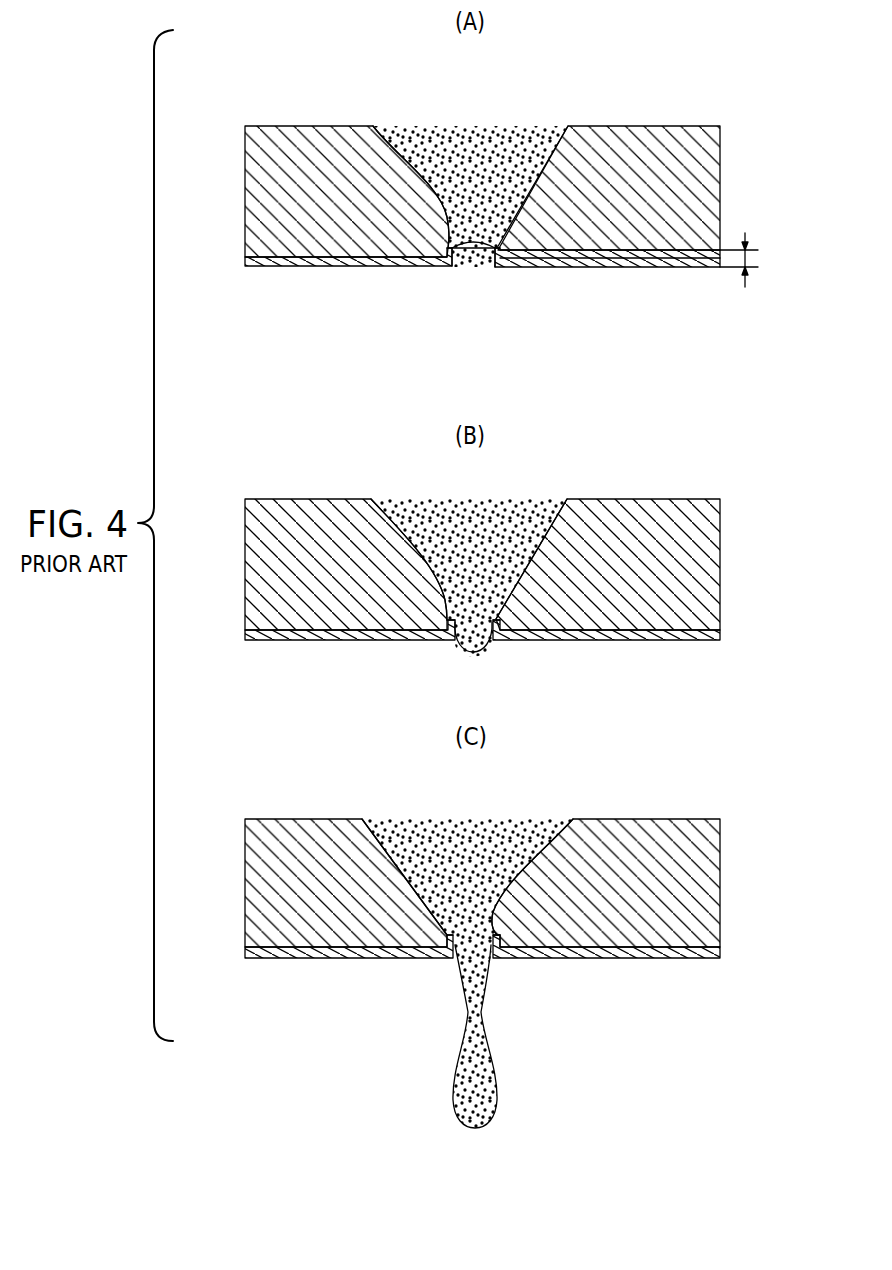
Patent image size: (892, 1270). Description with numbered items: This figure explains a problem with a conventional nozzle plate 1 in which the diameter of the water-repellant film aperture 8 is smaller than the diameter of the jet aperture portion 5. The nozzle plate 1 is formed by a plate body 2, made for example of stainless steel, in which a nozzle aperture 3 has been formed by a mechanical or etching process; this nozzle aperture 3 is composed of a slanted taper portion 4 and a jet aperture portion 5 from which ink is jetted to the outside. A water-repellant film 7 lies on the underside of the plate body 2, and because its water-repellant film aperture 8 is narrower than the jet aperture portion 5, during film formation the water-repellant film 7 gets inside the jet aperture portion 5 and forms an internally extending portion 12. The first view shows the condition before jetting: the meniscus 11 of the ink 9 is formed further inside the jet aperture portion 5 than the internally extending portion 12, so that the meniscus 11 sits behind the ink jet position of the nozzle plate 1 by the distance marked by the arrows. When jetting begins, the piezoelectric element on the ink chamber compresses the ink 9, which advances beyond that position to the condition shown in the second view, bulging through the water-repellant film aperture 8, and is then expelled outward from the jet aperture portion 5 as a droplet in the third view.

The nozzle plate 1 is at (526, 72).
The plate body 2 is at (700, 163).
The nozzle aperture 3 is at (528, 483).
The taper portion 4 is at (553, 150).
The jet aperture portion 5 is at (508, 858).
The water-repellant film 7 is at (254, 260).
The water-repellant film aperture 8 is at (494, 270).
The ink 9 is at (465, 140).
The meniscus 11 is at (471, 265).
The internally extending portion 12 is at (452, 263).